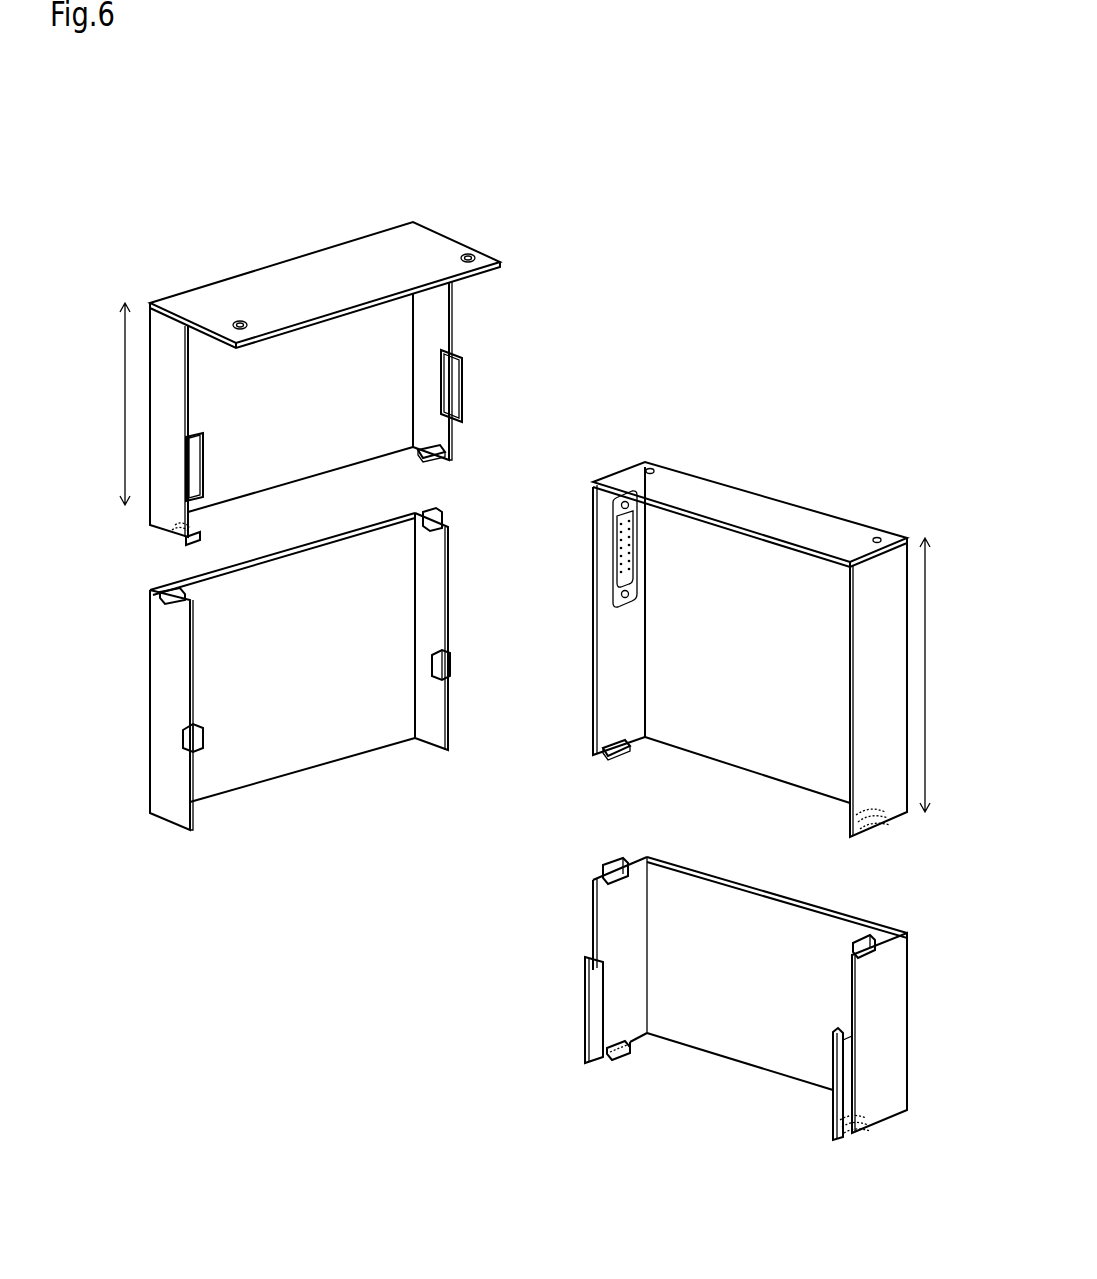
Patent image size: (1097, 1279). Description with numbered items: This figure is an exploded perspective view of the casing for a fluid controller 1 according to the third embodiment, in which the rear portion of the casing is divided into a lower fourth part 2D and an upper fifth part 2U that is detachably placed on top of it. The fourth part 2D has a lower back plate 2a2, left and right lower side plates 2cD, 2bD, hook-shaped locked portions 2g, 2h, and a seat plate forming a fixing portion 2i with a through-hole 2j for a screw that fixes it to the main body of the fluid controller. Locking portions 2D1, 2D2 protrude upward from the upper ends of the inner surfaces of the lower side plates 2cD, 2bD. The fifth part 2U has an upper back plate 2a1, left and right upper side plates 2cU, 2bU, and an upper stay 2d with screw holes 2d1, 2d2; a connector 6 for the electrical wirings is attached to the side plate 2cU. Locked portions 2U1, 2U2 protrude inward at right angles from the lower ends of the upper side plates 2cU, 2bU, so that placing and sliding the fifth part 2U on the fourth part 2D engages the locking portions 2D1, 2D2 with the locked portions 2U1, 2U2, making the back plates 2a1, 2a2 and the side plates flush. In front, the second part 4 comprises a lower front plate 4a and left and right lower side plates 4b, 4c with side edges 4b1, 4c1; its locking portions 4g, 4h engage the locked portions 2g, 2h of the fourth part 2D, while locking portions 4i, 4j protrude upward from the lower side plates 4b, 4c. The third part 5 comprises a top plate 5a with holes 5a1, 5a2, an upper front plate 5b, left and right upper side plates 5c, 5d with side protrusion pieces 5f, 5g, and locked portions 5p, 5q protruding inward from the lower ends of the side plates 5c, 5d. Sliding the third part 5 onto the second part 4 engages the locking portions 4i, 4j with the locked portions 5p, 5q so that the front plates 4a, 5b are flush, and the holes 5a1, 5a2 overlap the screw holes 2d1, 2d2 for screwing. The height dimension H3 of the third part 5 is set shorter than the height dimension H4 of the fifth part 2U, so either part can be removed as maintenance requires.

The casing for a fluid controller 1 is at (808, 243).
The third part 5 is at (483, 308).
The top plate 5a is at (310, 282).
The hole 5a1 is at (238, 322).
The hole 5a2 is at (470, 255).
The upper front plate 5b is at (312, 448).
The left upper side plate 5c is at (178, 362).
The right upper side plate 5d is at (433, 325).
The side protrusion piece 5f is at (203, 460).
The side protrusion piece 5g is at (452, 382).
The locked portion 5p is at (200, 533).
The locked portion 5q is at (425, 462).
The height dimension H3 is at (105, 404).
The second part 4 is at (482, 568).
The lower front plate 4a is at (317, 753).
The left lower side plate 4b is at (170, 805).
The side edge 4b1 is at (192, 815).
The right lower side plate 4c is at (427, 733).
The side edge 4c1 is at (452, 710).
The locking portion 4g is at (430, 672).
The locking portion 4h is at (205, 750).
The locking portion 4i is at (178, 590).
The locking portion 4j is at (437, 513).
The fifth part 2U is at (693, 703).
The upper back plate 2a1 is at (673, 642).
The right upper side plate 2bU is at (863, 612).
The left upper side plate 2cU is at (610, 487).
The upper stay 2d is at (790, 512).
The screw hole 2d1 is at (878, 536).
The screw hole 2d2 is at (652, 468).
The locked portion 2U1 is at (603, 753).
The locked portion 2U2 is at (880, 816).
The connector 6 is at (615, 567).
The height dimension H4 is at (949, 675).
The fourth part 2D is at (735, 1023).
The lower back plate 2a2 is at (667, 887).
The right lower side plate 2bD is at (885, 1112).
The left lower side plate 2cD is at (628, 1020).
The locking portion 2D1 is at (607, 867).
The locking portion 2D2 is at (857, 940).
The locked portion 2g is at (583, 965).
The locked portion 2h is at (835, 1037).
The fixing portion 2i is at (618, 1065).
The through-hole 2j is at (620, 1043).